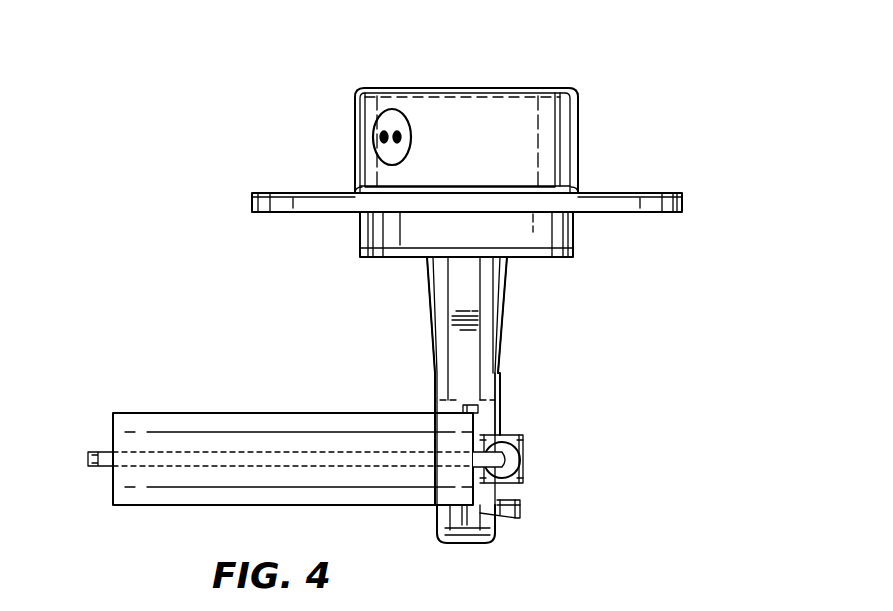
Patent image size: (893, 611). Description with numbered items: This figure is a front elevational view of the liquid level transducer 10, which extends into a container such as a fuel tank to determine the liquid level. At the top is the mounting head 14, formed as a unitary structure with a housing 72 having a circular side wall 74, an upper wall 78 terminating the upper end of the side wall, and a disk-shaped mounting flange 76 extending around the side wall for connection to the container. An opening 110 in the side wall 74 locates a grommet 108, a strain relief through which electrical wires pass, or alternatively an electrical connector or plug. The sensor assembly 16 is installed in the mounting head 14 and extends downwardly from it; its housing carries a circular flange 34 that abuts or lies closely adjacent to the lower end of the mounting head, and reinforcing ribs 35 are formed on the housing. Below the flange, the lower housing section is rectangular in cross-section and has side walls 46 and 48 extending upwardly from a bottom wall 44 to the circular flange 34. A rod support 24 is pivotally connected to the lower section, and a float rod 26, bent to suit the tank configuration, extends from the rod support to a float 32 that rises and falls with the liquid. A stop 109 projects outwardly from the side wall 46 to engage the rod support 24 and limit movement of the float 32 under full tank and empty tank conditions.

The liquid level transducer 10 is at (232, 116).
The mounting head 14 is at (388, 78).
The sensor assembly 16 is at (506, 312).
The rod support 24 is at (525, 445).
The float rod 26 is at (218, 466).
The float 32 is at (192, 413).
The circular flange 34 is at (573, 253).
The reinforcing ribs 35 is at (425, 277).
The bottom wall 44 is at (463, 545).
The side wall 46 is at (433, 373).
The side wall 48 is at (495, 363).
The housing 72 is at (577, 90).
The circular side wall 74 is at (580, 140).
The mounting flange 76 is at (628, 193).
The upper wall 78 is at (498, 87).
The grommet 108 is at (383, 147).
The stop 109 is at (520, 513).
The opening 110 is at (380, 113).